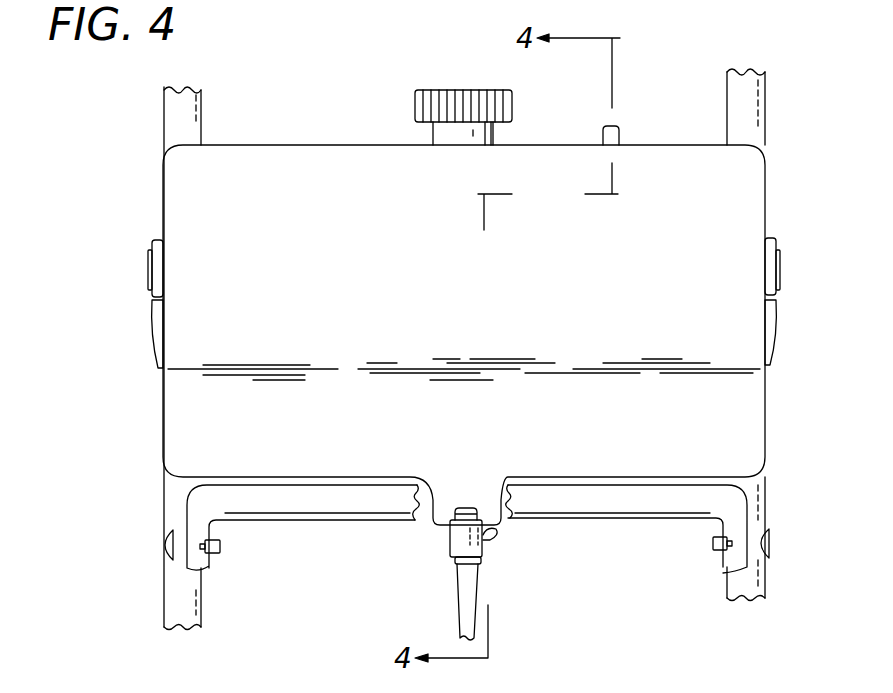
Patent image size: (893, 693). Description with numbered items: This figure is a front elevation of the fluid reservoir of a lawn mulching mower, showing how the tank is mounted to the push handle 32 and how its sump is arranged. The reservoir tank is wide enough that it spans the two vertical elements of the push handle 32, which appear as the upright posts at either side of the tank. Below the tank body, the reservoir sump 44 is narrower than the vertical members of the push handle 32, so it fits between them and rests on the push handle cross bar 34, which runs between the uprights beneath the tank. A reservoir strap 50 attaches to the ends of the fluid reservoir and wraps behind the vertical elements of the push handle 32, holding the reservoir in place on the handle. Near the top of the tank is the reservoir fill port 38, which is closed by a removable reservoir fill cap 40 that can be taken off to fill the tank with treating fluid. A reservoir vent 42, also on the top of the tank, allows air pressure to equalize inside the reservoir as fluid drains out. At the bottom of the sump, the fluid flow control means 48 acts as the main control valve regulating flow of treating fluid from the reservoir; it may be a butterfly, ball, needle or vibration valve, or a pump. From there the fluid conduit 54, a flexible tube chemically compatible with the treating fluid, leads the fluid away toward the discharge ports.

The push handle 32 is at (202, 113).
The push handle cross bar 34 is at (304, 520).
The reservoir fill port 38 is at (433, 130).
The reservoir fill cap 40 is at (433, 90).
The reservoir vent 42 is at (622, 138).
The reservoir sump 44 is at (477, 493).
The fluid flow control means 48 is at (483, 547).
The reservoir strap 50 is at (421, 335).
The fluid conduit 54 is at (460, 610).